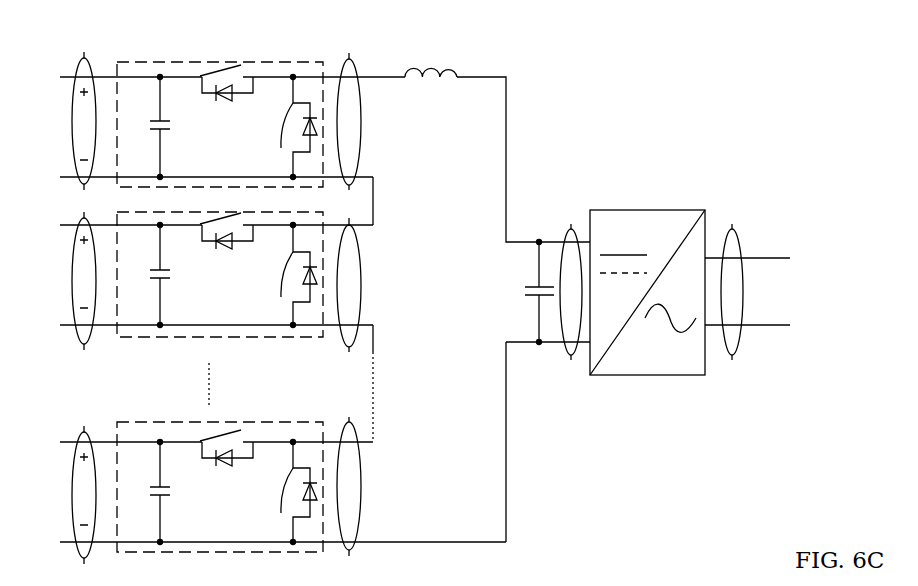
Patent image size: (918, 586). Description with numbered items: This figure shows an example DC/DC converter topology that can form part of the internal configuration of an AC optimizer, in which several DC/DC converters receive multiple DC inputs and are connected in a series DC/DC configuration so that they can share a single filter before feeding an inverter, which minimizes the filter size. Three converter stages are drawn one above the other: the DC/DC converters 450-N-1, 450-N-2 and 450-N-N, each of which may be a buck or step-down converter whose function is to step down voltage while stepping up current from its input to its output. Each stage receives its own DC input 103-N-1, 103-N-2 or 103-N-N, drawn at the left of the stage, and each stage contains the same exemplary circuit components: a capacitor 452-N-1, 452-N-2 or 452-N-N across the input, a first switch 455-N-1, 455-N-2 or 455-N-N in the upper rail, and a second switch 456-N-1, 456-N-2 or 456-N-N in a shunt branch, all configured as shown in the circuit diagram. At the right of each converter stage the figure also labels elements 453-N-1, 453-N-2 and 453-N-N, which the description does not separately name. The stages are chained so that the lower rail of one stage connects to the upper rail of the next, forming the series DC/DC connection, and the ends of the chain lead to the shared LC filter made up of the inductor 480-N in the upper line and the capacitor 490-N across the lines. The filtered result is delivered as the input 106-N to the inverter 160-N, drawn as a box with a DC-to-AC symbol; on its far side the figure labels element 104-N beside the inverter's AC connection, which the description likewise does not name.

The DC input 103-N-1 is at (84, 52).
The DC input 103-N-2 is at (84, 214).
The DC input 103-N-N is at (84, 428).
The DC/DC converter 450-N-1 is at (191, 56).
The DC/DC converter 450-N-2 is at (172, 345).
The DC/DC converter 450-N-N is at (264, 397).
The capacitor 452-N-1 is at (176, 131).
The capacitor 452-N-2 is at (176, 280).
The capacitor 452-N-N is at (176, 495).
The converter output 453-N-1 is at (349, 56).
The converter output 453-N-2 is at (349, 220).
The converter output 453-N-N is at (349, 422).
The switch 455-N-1 is at (258, 122).
The switch 455-N-2 is at (258, 270).
The switch 455-N-N is at (258, 484).
The switch 456-N-1 is at (279, 152).
The switch 456-N-2 is at (279, 300).
The switch 456-N-N is at (279, 516).
The inductor 480-N is at (436, 86).
The capacitor 490-N is at (514, 274).
The input 106-N is at (571, 226).
The AC output 104-N is at (732, 226).
The inverter 160-N is at (680, 375).